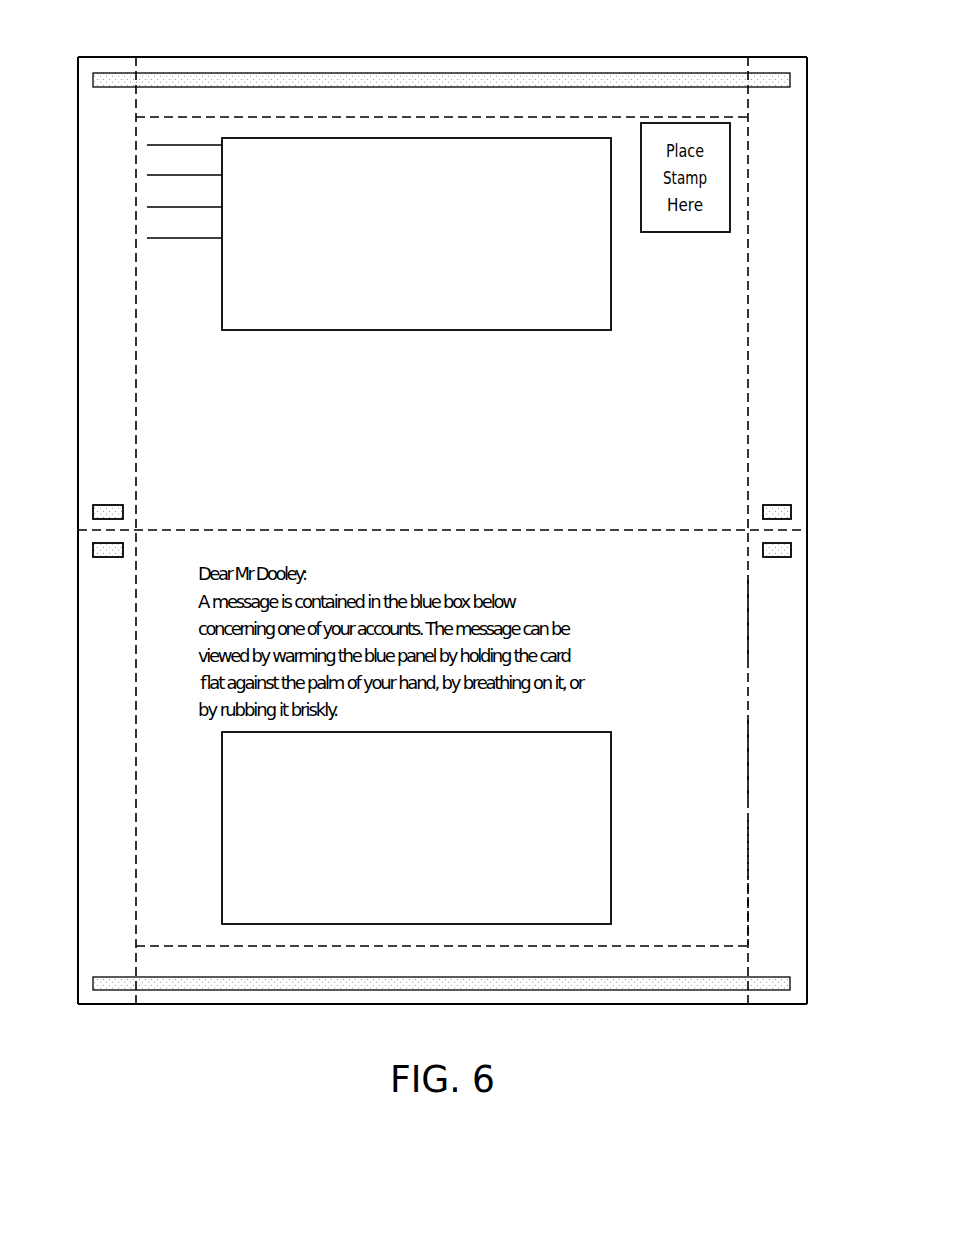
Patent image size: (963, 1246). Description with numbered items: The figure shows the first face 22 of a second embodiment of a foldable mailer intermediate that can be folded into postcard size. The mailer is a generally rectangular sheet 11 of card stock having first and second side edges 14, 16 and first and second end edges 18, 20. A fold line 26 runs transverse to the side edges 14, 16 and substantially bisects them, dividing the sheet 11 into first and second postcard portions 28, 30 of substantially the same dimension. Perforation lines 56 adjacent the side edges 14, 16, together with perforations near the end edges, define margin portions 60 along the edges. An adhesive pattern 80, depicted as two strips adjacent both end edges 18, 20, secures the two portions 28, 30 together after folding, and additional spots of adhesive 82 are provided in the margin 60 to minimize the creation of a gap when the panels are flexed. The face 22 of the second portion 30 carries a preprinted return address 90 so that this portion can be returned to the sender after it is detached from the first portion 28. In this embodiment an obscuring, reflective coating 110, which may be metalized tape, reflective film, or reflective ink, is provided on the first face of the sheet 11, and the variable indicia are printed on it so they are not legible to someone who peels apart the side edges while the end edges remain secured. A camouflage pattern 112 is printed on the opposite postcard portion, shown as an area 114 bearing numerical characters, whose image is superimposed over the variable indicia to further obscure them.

The sheet of card stock 11 is at (722, 757).
The first side edge 14 is at (78, 729).
The second side edge 16 is at (807, 367).
The first end edge 18 is at (268, 1004).
The second end edge 20 is at (537, 57).
The first face 22 is at (722, 851).
The fold line 26 is at (666, 530).
The first postcard portion 28 is at (722, 902).
The second postcard portion 30 is at (722, 250).
The perforation lines 56 is at (748, 623).
The margin portions 60 is at (90, 313).
The adhesive pattern 80 is at (790, 83).
The spots of adhesive 82 is at (93, 513).
The return address 90 is at (520, 391).
The reflective coating 110 is at (590, 810).
The camouflage pattern 112 is at (609, 295).
The area of numerical characters 114 is at (290, 330).